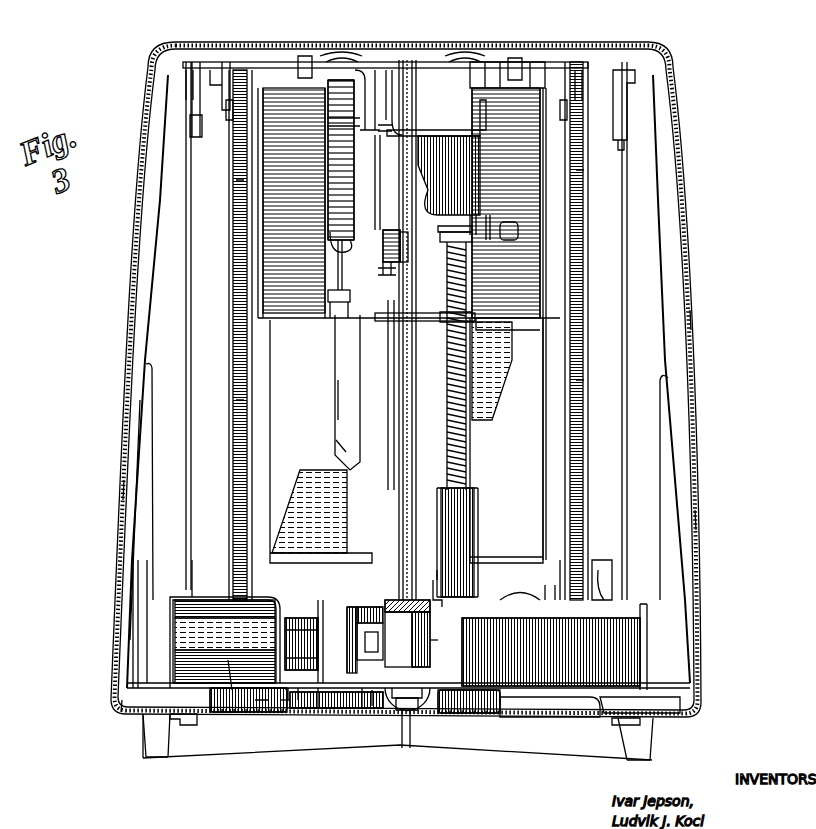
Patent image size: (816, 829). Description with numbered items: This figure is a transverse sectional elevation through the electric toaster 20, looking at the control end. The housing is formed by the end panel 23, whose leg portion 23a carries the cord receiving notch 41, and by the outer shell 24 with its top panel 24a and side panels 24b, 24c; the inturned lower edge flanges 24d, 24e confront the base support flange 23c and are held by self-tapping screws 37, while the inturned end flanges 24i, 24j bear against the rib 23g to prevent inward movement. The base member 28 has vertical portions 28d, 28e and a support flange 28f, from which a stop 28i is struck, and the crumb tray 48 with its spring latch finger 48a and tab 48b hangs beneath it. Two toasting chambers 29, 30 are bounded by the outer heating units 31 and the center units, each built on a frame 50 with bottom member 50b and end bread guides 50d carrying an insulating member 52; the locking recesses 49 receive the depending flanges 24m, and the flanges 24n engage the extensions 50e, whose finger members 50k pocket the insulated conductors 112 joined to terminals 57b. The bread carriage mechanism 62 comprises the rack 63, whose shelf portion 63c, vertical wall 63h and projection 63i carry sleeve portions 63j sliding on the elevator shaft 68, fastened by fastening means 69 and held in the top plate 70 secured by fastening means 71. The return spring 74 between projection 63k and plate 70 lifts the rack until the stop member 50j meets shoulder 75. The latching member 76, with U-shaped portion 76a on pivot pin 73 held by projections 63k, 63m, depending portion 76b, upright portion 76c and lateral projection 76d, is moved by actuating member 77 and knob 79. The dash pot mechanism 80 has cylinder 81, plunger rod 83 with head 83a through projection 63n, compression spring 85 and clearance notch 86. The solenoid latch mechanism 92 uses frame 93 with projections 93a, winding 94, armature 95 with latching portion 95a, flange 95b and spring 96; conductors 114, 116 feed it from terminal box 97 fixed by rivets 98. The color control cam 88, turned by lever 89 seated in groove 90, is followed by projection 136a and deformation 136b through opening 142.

The electric toaster 20 is at (327, 801).
The end panel 23 is at (690, 280).
The leg portion of end panel 23a is at (455, 760).
The base support flange 23c is at (678, 712).
The upwardly extending rib 23g is at (148, 442).
The outer shell 24 is at (690, 227).
The top panel 24a is at (281, 50).
The side panel 24b is at (127, 348).
The side panel 24c is at (692, 331).
The inturned lower edge flange 24d is at (124, 716).
The inturned lower edge flange 24e is at (650, 734).
The vertically extending inturned end flange 24i is at (124, 488).
The vertically extending inturned end flange 24j is at (697, 521).
The depending flange 24m is at (237, 48).
The depending flange 24n is at (542, 48).
The base member 28 is at (500, 702).
The vertical portion of base 28d is at (648, 662).
The vertical portion of base 28e is at (516, 620).
The support flange 28f is at (555, 722).
The stop 28i is at (322, 702).
The toasting chamber 29 is at (250, 438).
The toasting chamber 30 is at (584, 442).
The outer heating unit 31 is at (207, 356).
The self-tapping screw 37 is at (170, 758).
The cord receiving notch 41 is at (412, 760).
The crumb tray 48 is at (284, 692).
The spring latch finger 48a is at (400, 680).
The handle or tab 48b is at (408, 714).
The locking recess 49 is at (230, 110).
The rectangular frame 50 is at (612, 62).
The bottom member 50b is at (598, 567).
The end bread guide 50d is at (236, 197).
The L-shaped extension 50e is at (236, 415).
The stop member 50j is at (512, 224).
The finger member 50k is at (308, 58).
The insulating member 52 is at (186, 272).
The heating unit terminal 57b is at (192, 124).
The bread carriage mechanism 62 is at (548, 276).
The bread supporting rack 63 is at (268, 306).
The end member (shelf portion) 63c is at (480, 326).
The vertical wall portion 63h is at (478, 152).
The horizontal projection 63i is at (486, 131).
The sleeve portion 63j is at (342, 126).
The vertical projection 63k is at (332, 252).
The vertical projection 63m is at (388, 264).
The projection 63n is at (472, 232).
The carriage support post (elevator shaft) 68 is at (396, 493).
The fastening means 69 is at (446, 702).
The top plate 70 is at (386, 52).
The fastening means 71 is at (395, 58).
The pivot pin 73 is at (330, 294).
The carriage return spring 74 is at (336, 184).
The shoulder 75 is at (486, 236).
The latching member 76 is at (338, 375).
The U-shaped portion 76a is at (336, 263).
The depending latching portion 76b is at (342, 400).
The upwardly directed portion 76c is at (388, 231).
The angularly disposed lateral projection 76d is at (340, 452).
The carriage moving and latch actuating member 77 is at (402, 230).
The knob 79 is at (407, 330).
The spring and dash pot mechanism 80 is at (477, 511).
The cylinder 81 is at (470, 652).
The plunger rod 83 is at (468, 272).
The integral enlargement (head) 83a is at (462, 232).
The coiled compression spring 85 is at (470, 436).
The notch 86 is at (468, 314).
The color control cam 88 is at (428, 658).
The actuating lever 89 is at (428, 640).
The groove 90 is at (436, 598).
The solenoid latch mechanism 92 is at (224, 641).
The U-shaped support frame 93 is at (166, 595).
The projection 93a is at (145, 722).
The solenoid winding 94 is at (230, 684).
The armature 95 is at (284, 642).
The latching portion 95a is at (350, 690).
The washer or flange 95b is at (322, 620).
The compression spring 96 is at (292, 690).
The insulating terminal box 97 is at (558, 562).
The rivet 98 is at (546, 620).
The insulated conductor 112 is at (210, 72).
The conductor 114 is at (192, 562).
The conductor 116 is at (300, 692).
The projection of color control arm 136a is at (366, 656).
The cam follower deformation 136b is at (384, 708).
The opening 142 is at (365, 692).